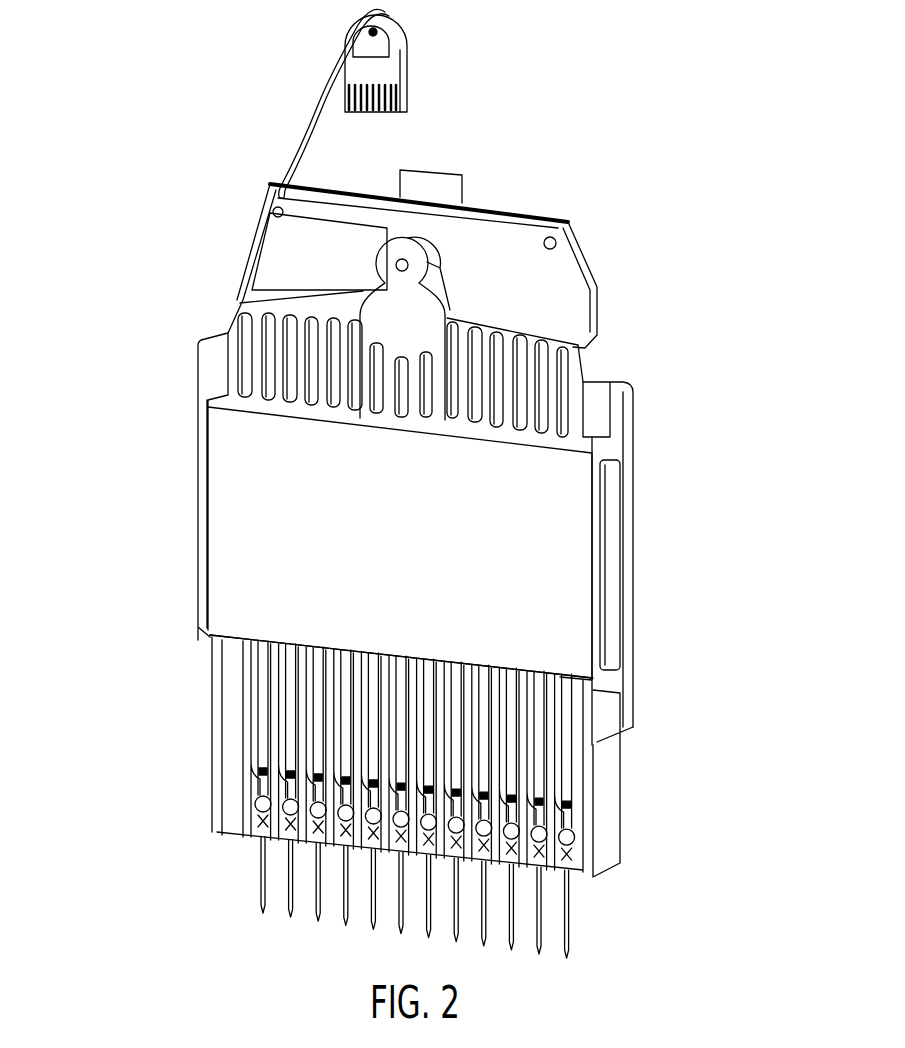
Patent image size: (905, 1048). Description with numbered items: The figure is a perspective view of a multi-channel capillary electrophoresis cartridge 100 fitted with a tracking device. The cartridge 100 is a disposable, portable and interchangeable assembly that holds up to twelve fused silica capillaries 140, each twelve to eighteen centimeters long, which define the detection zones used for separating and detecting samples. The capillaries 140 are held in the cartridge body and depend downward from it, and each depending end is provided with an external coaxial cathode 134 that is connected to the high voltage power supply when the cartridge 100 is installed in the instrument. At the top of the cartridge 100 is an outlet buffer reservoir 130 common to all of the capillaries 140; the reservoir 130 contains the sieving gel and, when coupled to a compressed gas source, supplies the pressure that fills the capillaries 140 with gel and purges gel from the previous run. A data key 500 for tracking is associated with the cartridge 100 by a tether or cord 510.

The cartridge 100 is at (452, 564).
The outlet buffer reservoir 130 is at (205, 312).
The external coaxial cathode 134 is at (570, 908).
The capillaries 140 is at (570, 943).
The data key 500 is at (408, 70).
The tether or cord 510 is at (318, 115).